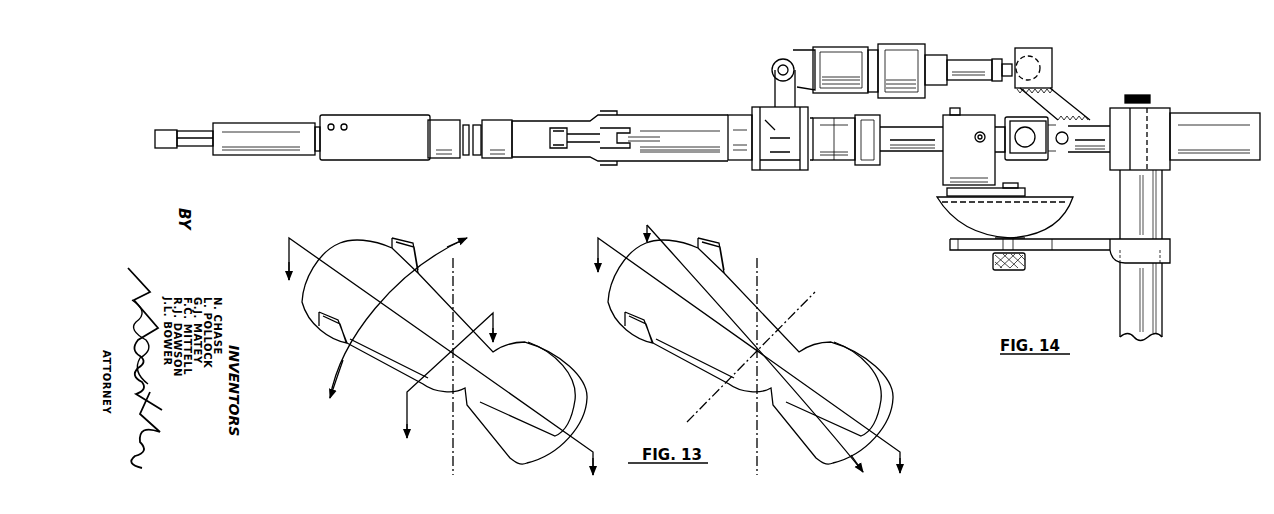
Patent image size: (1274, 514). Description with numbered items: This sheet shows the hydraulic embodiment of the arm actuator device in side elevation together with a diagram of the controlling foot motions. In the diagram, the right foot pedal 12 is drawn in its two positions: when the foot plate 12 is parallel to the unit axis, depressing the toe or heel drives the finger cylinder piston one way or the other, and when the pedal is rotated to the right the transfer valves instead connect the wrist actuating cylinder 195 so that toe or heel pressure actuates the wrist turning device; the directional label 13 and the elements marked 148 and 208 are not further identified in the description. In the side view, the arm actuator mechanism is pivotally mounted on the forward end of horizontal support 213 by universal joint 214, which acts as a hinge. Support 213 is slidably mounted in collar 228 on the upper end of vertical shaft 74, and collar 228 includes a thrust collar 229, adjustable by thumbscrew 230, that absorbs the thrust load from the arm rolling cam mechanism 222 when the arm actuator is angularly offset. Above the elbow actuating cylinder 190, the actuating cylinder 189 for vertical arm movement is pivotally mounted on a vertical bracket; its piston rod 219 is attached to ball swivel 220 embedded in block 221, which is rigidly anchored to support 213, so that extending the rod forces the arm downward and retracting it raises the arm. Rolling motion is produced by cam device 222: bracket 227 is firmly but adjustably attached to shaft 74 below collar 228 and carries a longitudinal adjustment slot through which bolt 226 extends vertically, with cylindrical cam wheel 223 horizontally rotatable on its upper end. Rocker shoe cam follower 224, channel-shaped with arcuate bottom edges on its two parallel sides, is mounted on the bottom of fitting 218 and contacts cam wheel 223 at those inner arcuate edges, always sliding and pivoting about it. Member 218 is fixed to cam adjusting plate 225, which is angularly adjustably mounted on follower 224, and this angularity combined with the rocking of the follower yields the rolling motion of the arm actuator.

In FIG. 14, the end fitting 148 is at (163, 136).
In FIG. 14, the wrist actuating cylinder 195 is at (373, 150).
In FIG. 14, the pivot block 208 is at (755, 108).
In FIG. 14, the actuating cylinder 189 is at (827, 63).
In FIG. 14, the piston rod 219 is at (966, 64).
In FIG. 14, the ball swivel 220 is at (1034, 54).
In FIG. 14, the block 221 is at (1046, 70).
In FIG. 14, the thumbscrew 230 is at (1133, 95).
In FIG. 14, the thrust collar 229 is at (1148, 115).
In FIG. 14, the collar 228 is at (1153, 158).
In FIG. 14, the horizontal support 213 is at (1208, 120).
In FIG. 14, the fitting 218 is at (968, 124).
In FIG. 14, the universal joint 214 is at (1021, 164).
In FIG. 14, the elbow actuating cylinder 190 is at (826, 141).
In FIG. 14, the cam adjusting plate 225 is at (946, 192).
In FIG. 14, the cam device 222 is at (924, 213).
In FIG. 14, the cylindrical cam wheel 223 is at (1005, 235).
In FIG. 14, the rocker shoe cam follower 224 is at (1049, 207).
In FIG. 14, the bolt 226 is at (992, 258).
In FIG. 14, the bracket 227 is at (1097, 244).
In FIG. 14, the vertical shaft 74 is at (1143, 311).
In FIG. 13, the section line 13 is at (463, 266).
In FIG. 13, the foot pedal 12 is at (800, 320).